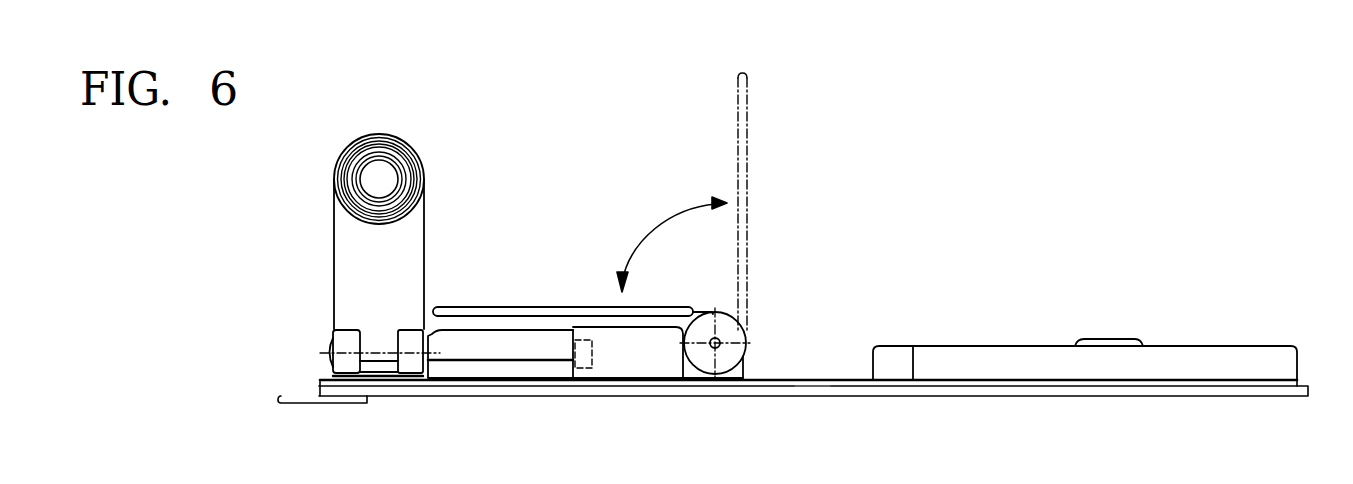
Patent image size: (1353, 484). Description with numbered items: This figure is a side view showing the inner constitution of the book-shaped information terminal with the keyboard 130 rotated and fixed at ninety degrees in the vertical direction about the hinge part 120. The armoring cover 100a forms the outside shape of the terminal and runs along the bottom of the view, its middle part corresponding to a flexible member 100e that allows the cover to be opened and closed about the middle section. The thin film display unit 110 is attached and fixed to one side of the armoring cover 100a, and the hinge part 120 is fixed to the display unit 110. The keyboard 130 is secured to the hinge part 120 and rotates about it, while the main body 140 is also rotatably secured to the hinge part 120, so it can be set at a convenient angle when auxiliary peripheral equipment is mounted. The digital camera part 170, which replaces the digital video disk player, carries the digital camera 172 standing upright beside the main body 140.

The thin film display unit 110 is at (1222, 346).
The hinge part 120 is at (722, 366).
The keyboard 130 is at (484, 307).
The main body 140 is at (641, 362).
The digital camera part 170 is at (494, 368).
The digital camera 172 is at (333, 258).
The armoring cover 100a is at (1247, 398).
The flexible member 100e is at (801, 378).